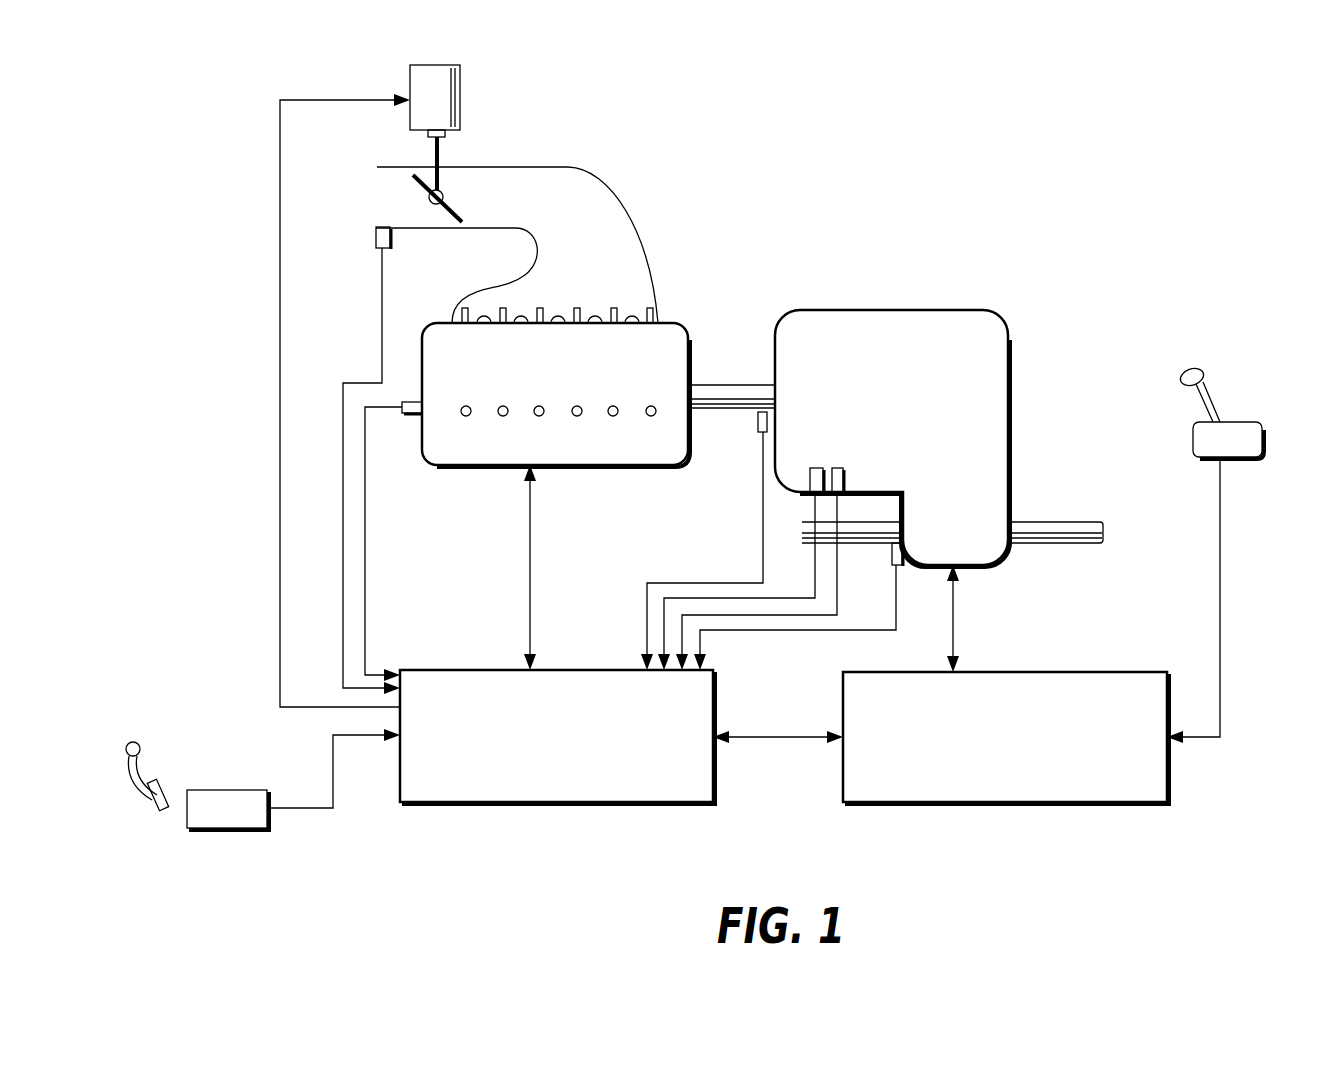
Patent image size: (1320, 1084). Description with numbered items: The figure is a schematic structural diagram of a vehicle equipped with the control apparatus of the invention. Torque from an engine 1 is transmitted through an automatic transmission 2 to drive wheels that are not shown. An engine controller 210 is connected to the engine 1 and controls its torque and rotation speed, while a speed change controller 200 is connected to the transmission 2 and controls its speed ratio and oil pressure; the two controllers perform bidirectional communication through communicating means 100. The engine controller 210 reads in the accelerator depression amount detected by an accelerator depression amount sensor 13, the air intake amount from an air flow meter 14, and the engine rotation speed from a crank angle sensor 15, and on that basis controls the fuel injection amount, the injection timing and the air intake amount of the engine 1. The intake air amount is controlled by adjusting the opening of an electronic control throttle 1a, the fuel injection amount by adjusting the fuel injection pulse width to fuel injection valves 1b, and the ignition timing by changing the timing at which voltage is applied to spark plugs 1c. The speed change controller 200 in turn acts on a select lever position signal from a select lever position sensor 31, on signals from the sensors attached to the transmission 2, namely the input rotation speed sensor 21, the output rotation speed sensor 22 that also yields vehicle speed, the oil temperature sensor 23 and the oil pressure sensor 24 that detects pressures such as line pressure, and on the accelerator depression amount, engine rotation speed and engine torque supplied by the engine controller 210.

The engine 1 is at (458, 455).
The electronic control throttle 1a is at (470, 136).
The fuel injection valves 1b is at (452, 410).
The spark plugs 1c is at (455, 297).
The automatic transmission 2 is at (939, 420).
The accelerator depression amount sensor 13 is at (218, 797).
The air flow meter 14 is at (379, 241).
The crank angle sensor 15 is at (410, 400).
The input rotation speed sensor 21 is at (757, 441).
The output rotation speed sensor 22 is at (892, 560).
The oil temperature sensor 23 is at (803, 494).
The oil pressure sensor 24 is at (845, 496).
The select lever position sensor 31 is at (1225, 440).
The communicating means 100 is at (778, 740).
The speed change controller 200 is at (877, 692).
The engine controller 210 is at (498, 685).